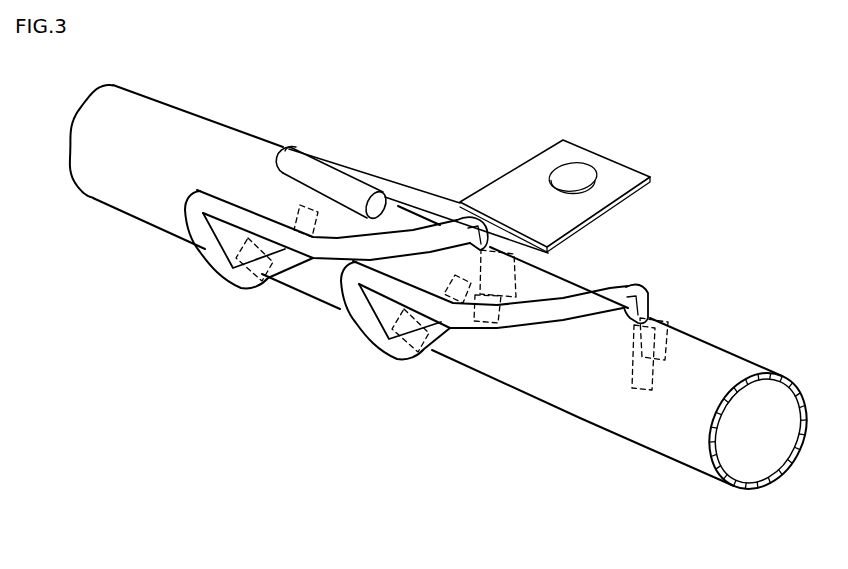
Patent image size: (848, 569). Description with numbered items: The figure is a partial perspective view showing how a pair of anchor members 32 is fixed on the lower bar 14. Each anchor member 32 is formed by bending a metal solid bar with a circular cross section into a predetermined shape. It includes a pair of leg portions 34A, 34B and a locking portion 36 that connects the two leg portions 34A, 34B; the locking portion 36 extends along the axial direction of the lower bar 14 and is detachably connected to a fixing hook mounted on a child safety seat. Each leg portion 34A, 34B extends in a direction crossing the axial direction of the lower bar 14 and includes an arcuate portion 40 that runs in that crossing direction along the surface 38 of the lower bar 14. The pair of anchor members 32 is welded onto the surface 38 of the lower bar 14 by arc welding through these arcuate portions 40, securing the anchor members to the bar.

The lower bar 14 is at (581, 421).
The anchor member 32 is at (428, 270).
The leg portion 34A is at (208, 262).
The leg portion 34B is at (415, 237).
The locking portion 36 is at (240, 215).
The surface 38 is at (160, 140).
The arcuate portion 40 is at (257, 288).